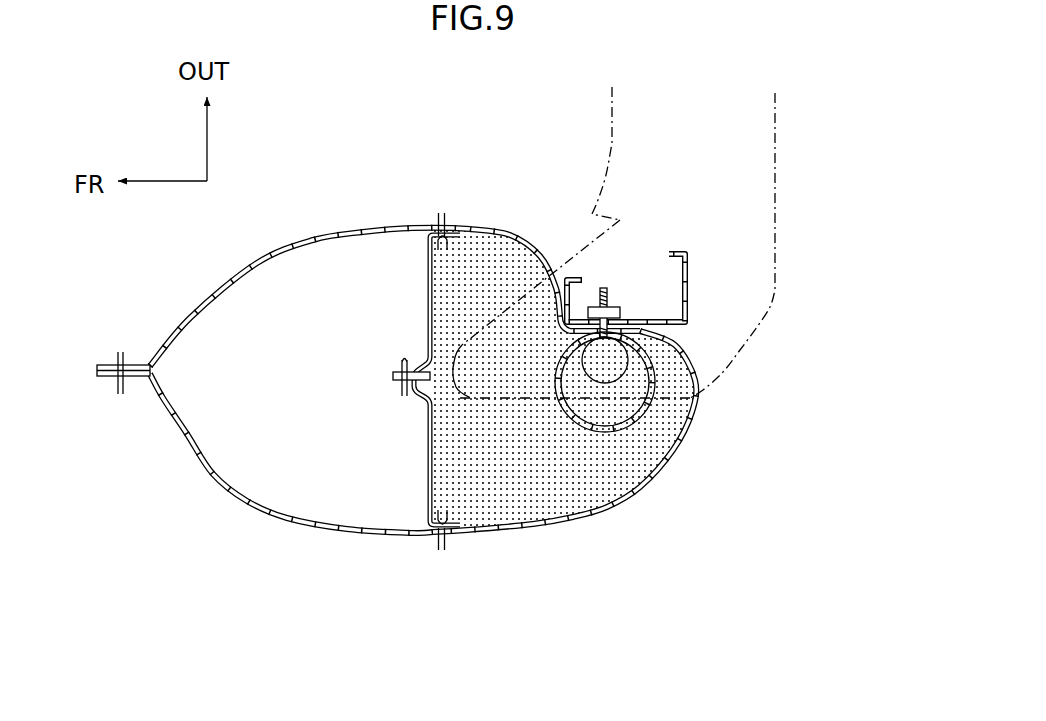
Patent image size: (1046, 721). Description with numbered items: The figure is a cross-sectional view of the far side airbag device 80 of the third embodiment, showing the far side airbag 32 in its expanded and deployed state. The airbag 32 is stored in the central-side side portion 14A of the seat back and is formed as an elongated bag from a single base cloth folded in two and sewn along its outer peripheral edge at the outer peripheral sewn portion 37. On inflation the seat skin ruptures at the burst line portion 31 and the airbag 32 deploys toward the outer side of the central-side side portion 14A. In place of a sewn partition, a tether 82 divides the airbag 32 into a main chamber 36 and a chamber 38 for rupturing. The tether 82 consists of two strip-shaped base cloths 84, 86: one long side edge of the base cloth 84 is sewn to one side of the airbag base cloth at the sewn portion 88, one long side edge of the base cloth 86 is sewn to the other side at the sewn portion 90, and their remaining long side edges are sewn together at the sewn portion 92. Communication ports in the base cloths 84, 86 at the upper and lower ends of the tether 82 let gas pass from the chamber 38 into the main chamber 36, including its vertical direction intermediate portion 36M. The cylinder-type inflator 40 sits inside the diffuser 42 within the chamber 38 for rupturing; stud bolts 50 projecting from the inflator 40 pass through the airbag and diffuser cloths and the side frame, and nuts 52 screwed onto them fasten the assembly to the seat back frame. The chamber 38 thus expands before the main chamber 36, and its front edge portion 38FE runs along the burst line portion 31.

The central-side side portion 14A is at (580, 242).
The burst line portion 31 is at (460, 398).
The far side airbag 32 is at (332, 220).
The main chamber 36 is at (213, 480).
The vertical direction intermediate portion 36M is at (283, 518).
The outer peripheral sewn portion 37 is at (120, 387).
The chamber for rupturing 38 is at (542, 524).
The front edge portion 38FE is at (425, 397).
The inflator 40 is at (617, 397).
The diffuser 42 is at (609, 436).
The stud bolts 50 is at (606, 287).
The nuts 52 is at (627, 312).
The far side airbag device for a vehicle 80 is at (407, 155).
The tether 82 is at (426, 462).
The base cloth 84 is at (427, 477).
The base cloth 86 is at (427, 282).
The sewn portion 88 is at (446, 548).
The sewn portion 90 is at (550, 248).
The sewn portion 92 is at (405, 360).